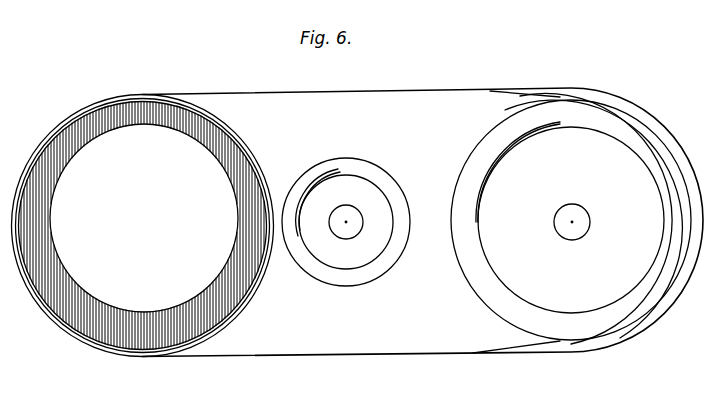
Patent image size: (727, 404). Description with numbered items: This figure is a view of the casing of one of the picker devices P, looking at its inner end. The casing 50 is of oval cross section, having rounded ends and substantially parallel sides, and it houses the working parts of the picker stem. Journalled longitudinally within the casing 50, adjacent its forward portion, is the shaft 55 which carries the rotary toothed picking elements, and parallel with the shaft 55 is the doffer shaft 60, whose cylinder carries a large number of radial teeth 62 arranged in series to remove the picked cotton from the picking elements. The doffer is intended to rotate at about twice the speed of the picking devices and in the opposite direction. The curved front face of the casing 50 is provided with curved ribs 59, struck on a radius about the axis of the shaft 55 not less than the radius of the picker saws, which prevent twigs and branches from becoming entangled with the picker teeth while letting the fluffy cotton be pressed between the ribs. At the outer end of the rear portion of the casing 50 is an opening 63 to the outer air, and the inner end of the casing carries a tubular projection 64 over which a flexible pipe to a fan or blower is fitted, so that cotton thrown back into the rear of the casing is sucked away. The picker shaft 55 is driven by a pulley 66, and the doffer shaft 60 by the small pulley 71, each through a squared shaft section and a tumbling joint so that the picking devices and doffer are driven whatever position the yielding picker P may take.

The casing 50 is at (478, 347).
The shaft 55 is at (571, 232).
The curved ribs 59 is at (672, 306).
The shaft 60 is at (348, 228).
The radial teeth 62 is at (266, 223).
The opening 63 is at (143, 226).
The tubular projection 64 is at (232, 319).
The pulley 66 is at (600, 333).
The small pulley 71 is at (378, 280).
The picker devices P is at (212, 379).